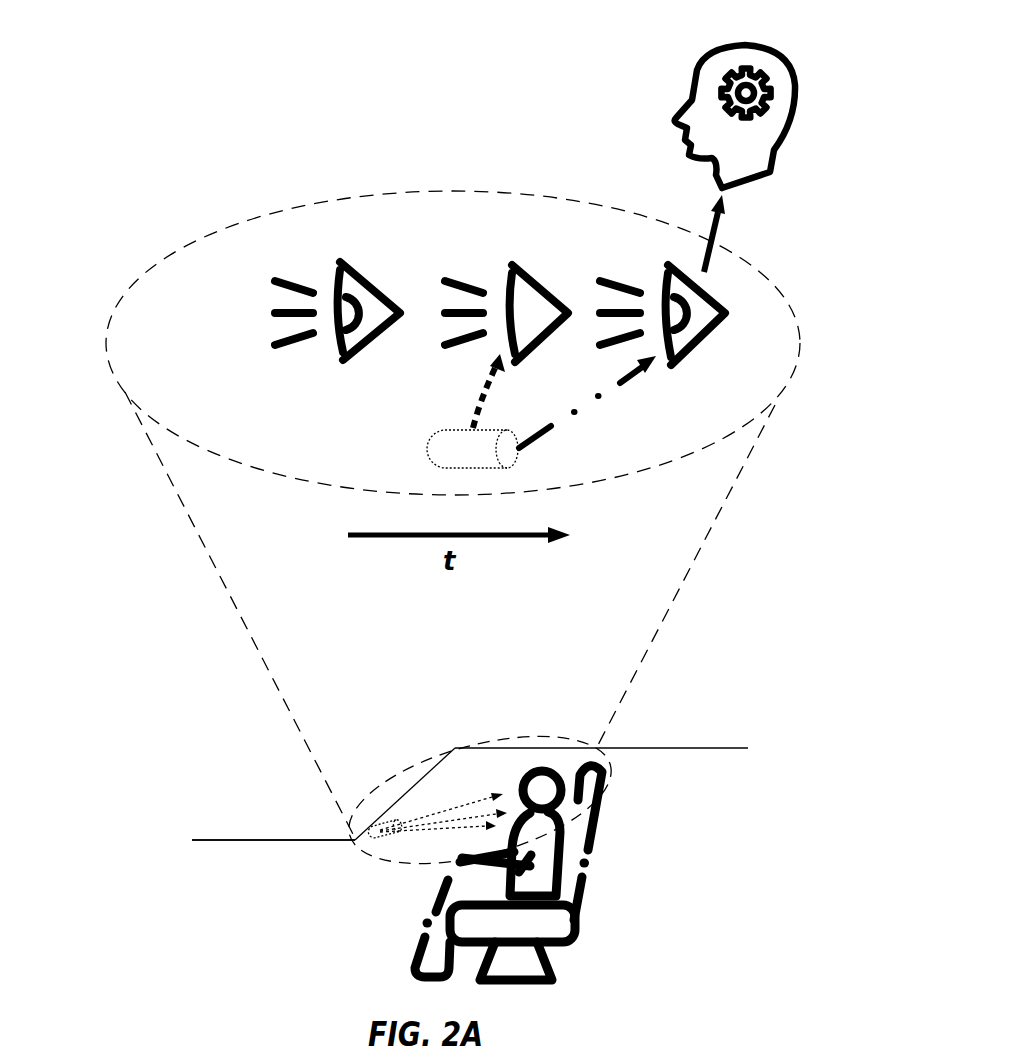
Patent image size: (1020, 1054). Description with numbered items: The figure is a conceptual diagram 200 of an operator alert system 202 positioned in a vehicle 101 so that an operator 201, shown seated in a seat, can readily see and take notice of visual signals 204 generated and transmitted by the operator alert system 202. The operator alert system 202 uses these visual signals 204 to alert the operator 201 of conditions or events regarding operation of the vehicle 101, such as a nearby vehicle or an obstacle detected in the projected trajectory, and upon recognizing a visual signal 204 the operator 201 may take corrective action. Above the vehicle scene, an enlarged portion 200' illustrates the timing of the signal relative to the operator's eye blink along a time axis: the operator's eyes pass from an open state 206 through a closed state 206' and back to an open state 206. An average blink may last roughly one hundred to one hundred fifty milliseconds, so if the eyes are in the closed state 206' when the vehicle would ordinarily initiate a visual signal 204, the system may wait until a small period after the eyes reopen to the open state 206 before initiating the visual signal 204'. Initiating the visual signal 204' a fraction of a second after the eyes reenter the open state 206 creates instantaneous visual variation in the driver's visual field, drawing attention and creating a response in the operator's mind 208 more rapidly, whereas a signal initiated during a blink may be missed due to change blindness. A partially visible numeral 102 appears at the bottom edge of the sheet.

The enlarged portion 200' is at (453, 503).
The open state 206 is at (510, 304).
The closed state 206' is at (506, 290).
The operator's mind 208 is at (687, 90).
The operator alert system 202 is at (440, 455).
The visual signal 204 is at (440, 593).
The visual signal 204' is at (607, 406).
The conceptual diagram 200 is at (420, 780).
The vehicle 101 is at (240, 830).
The operator 201 is at (540, 765).
The seat / vehicle component 102 is at (573, 1046).